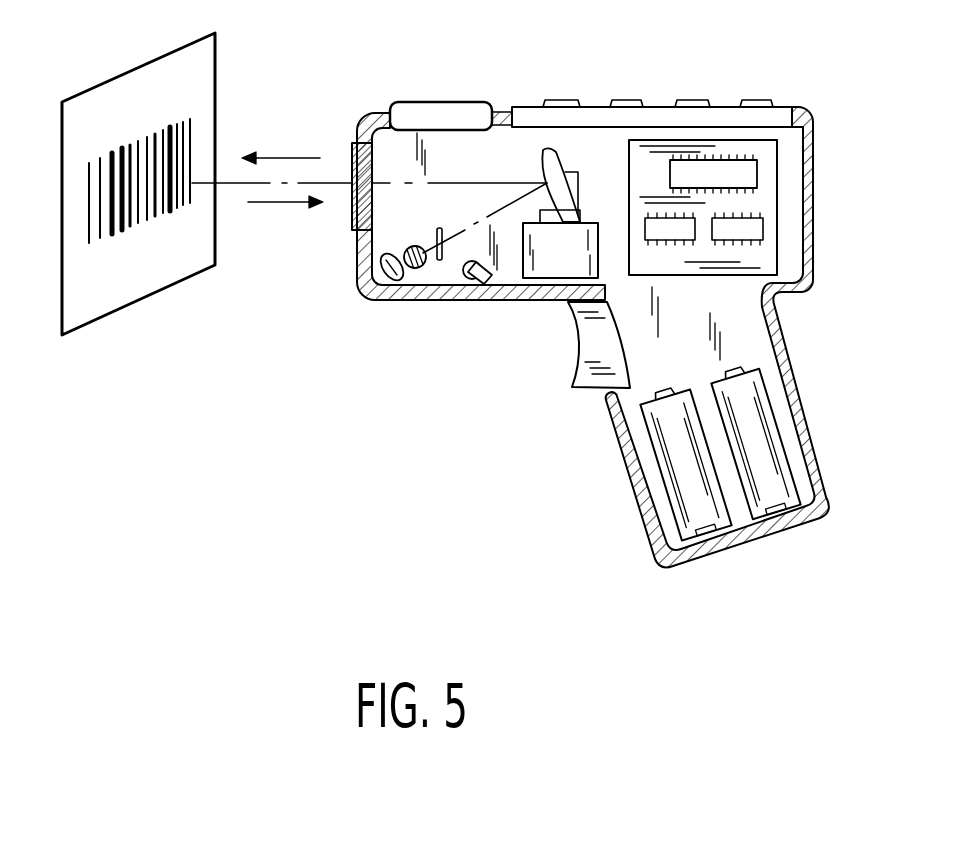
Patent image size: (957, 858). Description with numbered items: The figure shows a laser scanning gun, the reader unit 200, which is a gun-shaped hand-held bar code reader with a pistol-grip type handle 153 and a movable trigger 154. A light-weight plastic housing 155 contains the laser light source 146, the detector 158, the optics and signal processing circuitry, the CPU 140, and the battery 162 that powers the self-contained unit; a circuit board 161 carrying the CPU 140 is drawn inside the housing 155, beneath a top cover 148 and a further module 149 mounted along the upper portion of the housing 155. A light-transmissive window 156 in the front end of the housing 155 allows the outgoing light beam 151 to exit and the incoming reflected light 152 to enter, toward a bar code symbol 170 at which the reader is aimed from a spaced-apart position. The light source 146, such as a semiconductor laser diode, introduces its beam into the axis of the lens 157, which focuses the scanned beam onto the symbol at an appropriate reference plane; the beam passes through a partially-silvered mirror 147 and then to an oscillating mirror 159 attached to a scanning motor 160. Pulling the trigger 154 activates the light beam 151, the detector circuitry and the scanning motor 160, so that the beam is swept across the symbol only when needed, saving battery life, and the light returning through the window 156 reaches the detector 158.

The CPU 140 is at (680, 170).
The light source 146 is at (381, 270).
The partially-silvered mirror 147 is at (440, 260).
The top housing cover with keys 148 is at (728, 113).
The top-mounted module 149 is at (418, 101).
The light beam 151 is at (276, 158).
The reflected light 152 is at (285, 204).
The handle 153 is at (637, 482).
The trigger 154 is at (573, 383).
The housing 155 is at (813, 228).
The light-transmissive window 156 is at (352, 155).
The lens 157 is at (417, 268).
The detector 158 is at (487, 280).
The oscillating mirror 159 is at (560, 157).
The scanning motor 160 is at (565, 274).
The printed circuit board 161 is at (777, 177).
The battery 162 is at (757, 370).
The bar code symbol 170 is at (157, 130).
The reader unit 200 is at (455, 442).